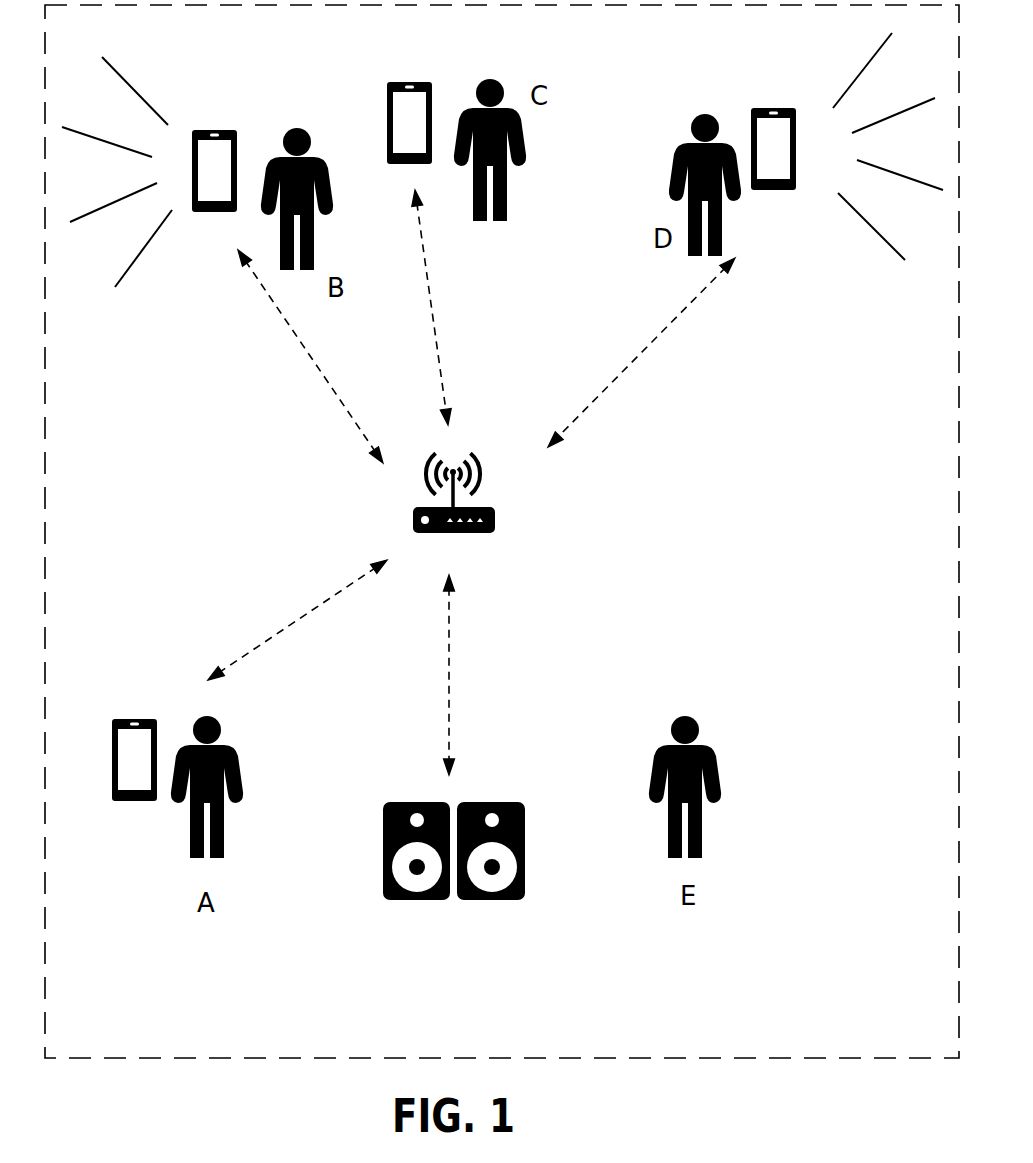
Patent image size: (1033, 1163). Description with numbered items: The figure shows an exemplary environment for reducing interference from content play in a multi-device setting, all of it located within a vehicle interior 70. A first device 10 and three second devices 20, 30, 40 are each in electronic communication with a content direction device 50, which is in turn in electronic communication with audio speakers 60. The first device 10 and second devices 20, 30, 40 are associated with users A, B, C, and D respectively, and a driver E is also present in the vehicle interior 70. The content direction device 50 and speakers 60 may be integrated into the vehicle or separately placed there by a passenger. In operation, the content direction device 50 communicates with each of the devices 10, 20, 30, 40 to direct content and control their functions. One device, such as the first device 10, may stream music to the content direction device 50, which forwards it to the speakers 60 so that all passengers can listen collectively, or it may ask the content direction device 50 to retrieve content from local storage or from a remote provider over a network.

The first device 10 is at (132, 718).
The second device 20 is at (199, 130).
The second device 30 is at (395, 82).
The second device 40 is at (757, 108).
The content direction device 50 is at (483, 504).
The audio speakers 60 is at (485, 800).
The vehicle interior 70 is at (713, 3).